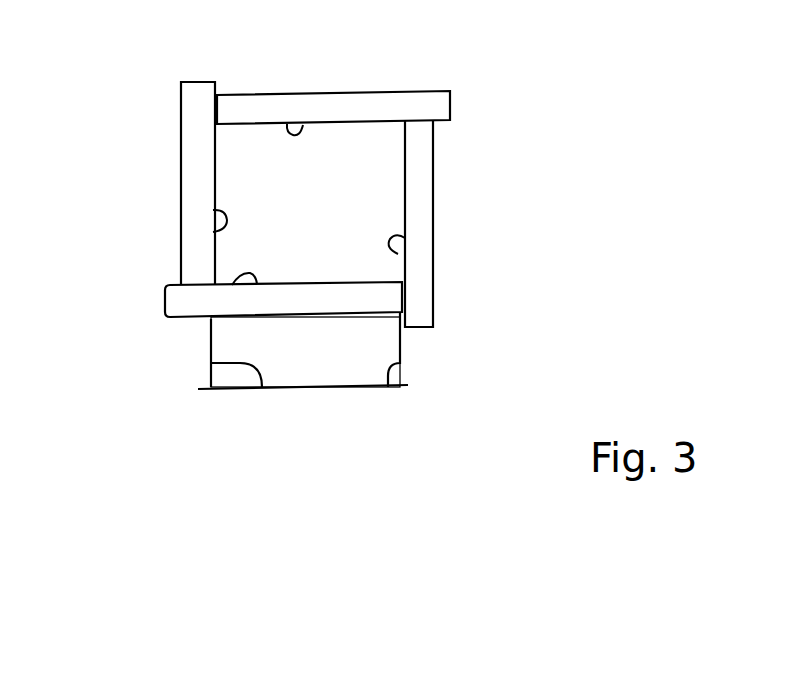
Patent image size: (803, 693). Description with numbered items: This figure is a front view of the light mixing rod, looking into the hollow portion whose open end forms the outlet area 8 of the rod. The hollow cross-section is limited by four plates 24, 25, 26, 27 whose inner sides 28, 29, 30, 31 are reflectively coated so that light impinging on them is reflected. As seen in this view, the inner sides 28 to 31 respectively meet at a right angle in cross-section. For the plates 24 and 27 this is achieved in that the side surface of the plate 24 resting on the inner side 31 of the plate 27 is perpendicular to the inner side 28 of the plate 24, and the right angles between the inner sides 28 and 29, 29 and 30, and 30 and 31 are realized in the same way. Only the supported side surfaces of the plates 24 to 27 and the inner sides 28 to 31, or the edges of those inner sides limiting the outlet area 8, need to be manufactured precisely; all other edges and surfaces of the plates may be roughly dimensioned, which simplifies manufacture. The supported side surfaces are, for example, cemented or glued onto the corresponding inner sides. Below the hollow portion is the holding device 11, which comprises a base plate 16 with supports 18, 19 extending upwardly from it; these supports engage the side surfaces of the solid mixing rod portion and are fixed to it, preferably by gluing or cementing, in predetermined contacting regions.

The outlet area 8 is at (381, 172).
The holding device 11 is at (338, 393).
The base plate 16 is at (223, 388).
The support 18 is at (262, 387).
The support 19 is at (388, 387).
The plate 24 is at (276, 94).
The plate 25 is at (437, 205).
The plate 26 is at (181, 323).
The plate 27 is at (178, 248).
The inner side 28 is at (303, 125).
The inner side 29 is at (398, 254).
The inner side 30 is at (232, 285).
The inner side 31 is at (213, 210).